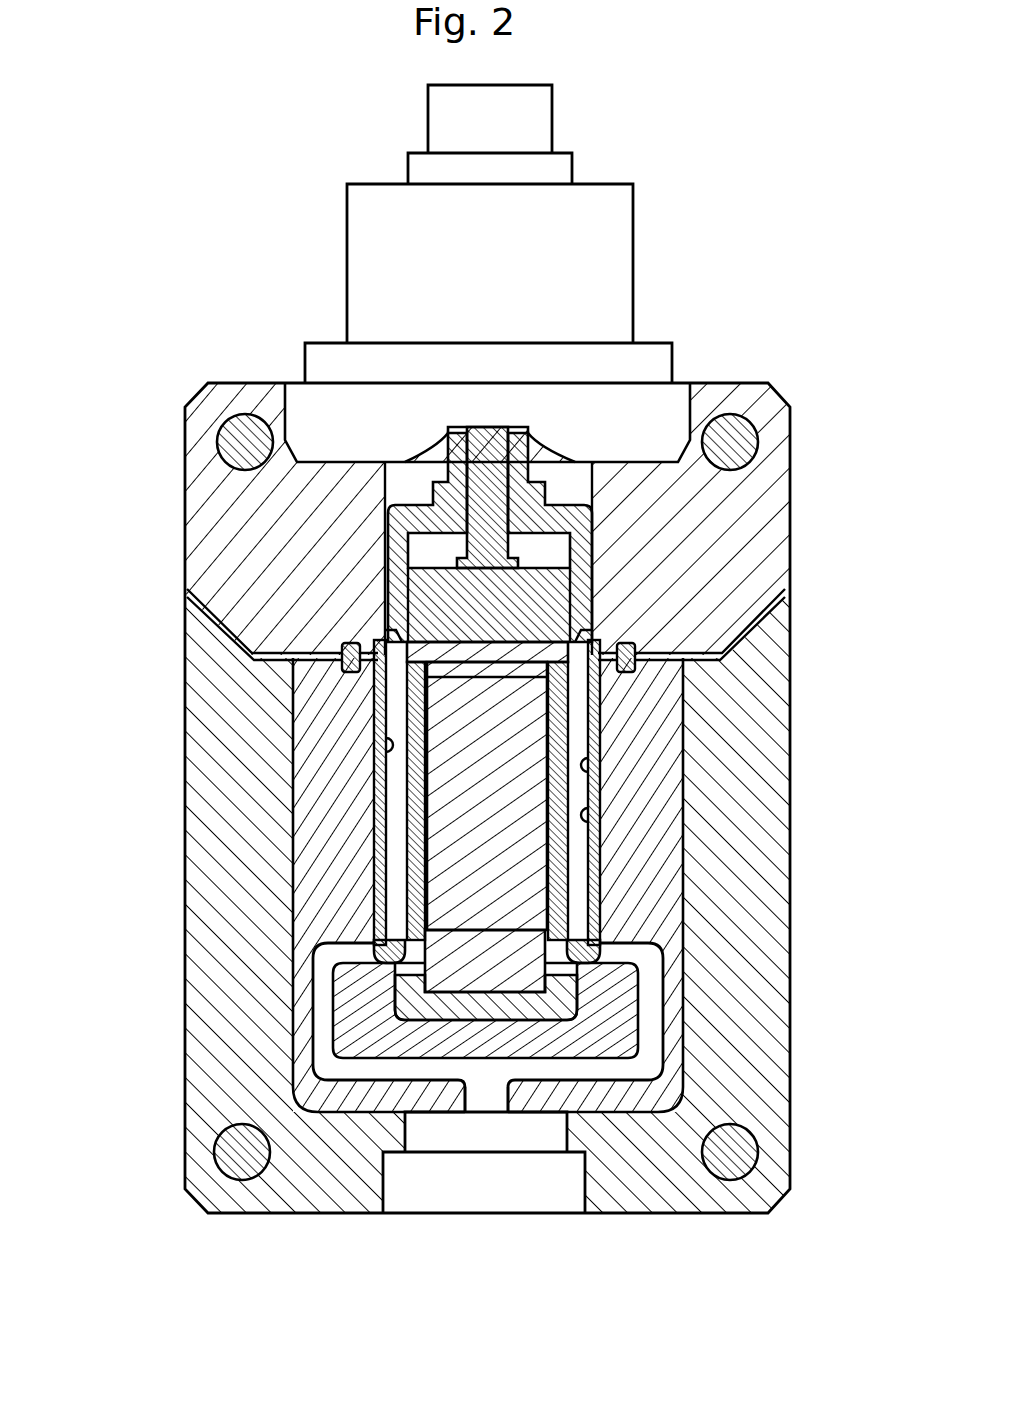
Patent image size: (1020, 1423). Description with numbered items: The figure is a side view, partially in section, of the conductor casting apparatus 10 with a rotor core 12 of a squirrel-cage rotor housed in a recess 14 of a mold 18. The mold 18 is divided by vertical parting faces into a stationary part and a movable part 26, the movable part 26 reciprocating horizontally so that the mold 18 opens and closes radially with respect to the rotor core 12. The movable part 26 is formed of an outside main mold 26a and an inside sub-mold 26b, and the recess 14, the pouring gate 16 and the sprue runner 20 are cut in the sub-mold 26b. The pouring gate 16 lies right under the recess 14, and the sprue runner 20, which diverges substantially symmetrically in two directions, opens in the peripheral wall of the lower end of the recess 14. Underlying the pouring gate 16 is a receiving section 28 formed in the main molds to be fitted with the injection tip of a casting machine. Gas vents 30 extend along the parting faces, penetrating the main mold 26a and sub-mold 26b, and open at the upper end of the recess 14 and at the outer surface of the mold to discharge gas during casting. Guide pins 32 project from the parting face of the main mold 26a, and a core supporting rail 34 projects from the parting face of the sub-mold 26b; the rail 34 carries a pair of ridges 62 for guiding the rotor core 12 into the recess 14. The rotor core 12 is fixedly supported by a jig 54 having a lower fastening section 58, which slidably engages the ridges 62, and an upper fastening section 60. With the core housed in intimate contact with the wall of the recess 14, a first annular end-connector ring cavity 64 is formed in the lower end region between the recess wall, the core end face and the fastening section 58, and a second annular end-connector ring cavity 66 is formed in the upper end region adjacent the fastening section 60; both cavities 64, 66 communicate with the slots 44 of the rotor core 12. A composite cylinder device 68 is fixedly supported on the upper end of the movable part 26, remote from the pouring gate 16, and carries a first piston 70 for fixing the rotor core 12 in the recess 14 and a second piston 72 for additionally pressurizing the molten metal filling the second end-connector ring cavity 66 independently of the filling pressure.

The conductor casting apparatus 10 is at (268, 307).
The rotor core 12 is at (366, 817).
The recess 14 is at (593, 757).
The pouring gate 16 is at (487, 1100).
The mold 18 is at (795, 530).
The sprue runner 20 is at (622, 1033).
The movable part 26 is at (800, 771).
The main mold 26a is at (755, 877).
The sub-mold 26b is at (645, 908).
The receiving section 28 is at (585, 1178).
The gas vents 30 is at (240, 648).
The guide pins 32 is at (216, 443).
The core supporting rail 34 is at (650, 1015).
The slots 44 is at (386, 745).
The jig 54 is at (520, 730).
The fastening section 58 is at (460, 960).
The fastening section 60 is at (455, 666).
The ridges 62 is at (412, 987).
The first annular end-connector ring cavity 64 is at (390, 950).
The second annular end-connector ring cavity 66 is at (392, 636).
The composite cylinder device 68 is at (638, 241).
The first piston 70 is at (435, 562).
The second piston 72 is at (417, 493).